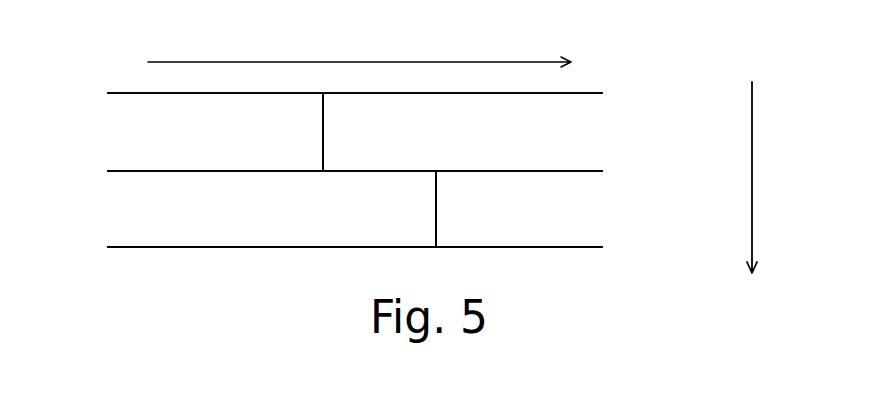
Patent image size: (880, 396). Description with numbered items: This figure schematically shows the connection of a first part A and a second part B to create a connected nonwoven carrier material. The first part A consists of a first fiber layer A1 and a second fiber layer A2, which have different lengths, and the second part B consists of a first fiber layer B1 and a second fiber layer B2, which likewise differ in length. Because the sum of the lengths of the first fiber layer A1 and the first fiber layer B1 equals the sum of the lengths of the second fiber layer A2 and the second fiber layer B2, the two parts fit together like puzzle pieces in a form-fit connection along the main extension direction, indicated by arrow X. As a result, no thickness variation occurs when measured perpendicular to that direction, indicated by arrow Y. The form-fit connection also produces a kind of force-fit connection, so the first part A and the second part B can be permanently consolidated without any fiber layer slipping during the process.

The first part A is at (80, 102).
The second part B is at (632, 102).
The first fiber layer of the first part A1 is at (215, 132).
The second fiber layer of the first part A2 is at (272, 209).
The first fiber layer of the second part B1 is at (462, 132).
The second fiber layer of the second part B2 is at (519, 209).
The main extension direction arrow X is at (359, 48).
The perpendicular direction arrow Y is at (764, 177).